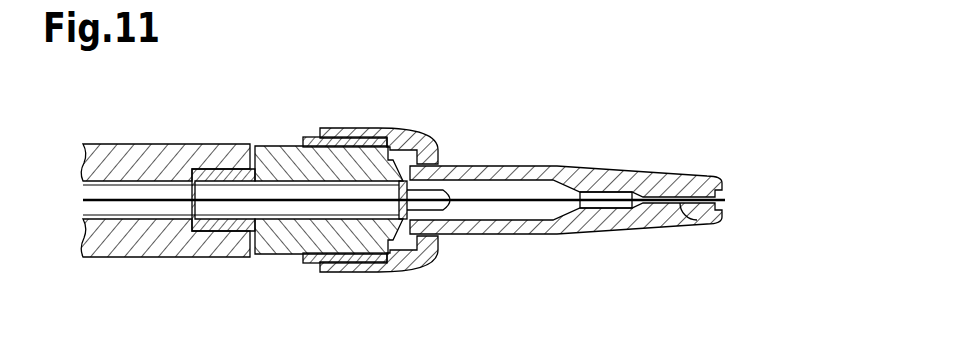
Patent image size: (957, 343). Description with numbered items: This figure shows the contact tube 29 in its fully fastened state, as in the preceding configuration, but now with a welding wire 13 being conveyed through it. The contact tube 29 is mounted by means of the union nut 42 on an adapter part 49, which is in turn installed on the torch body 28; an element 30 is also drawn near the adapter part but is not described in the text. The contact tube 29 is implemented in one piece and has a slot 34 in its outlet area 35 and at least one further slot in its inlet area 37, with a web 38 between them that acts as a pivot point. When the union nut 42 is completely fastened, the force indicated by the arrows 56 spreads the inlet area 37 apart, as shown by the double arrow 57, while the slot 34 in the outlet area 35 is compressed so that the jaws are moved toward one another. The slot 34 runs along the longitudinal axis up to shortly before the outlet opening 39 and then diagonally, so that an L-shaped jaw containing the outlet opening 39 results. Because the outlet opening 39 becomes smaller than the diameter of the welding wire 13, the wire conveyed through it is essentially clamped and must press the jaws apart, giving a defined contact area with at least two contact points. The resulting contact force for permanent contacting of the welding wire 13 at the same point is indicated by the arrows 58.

The welding wire 13 is at (135, 205).
The torch body 28 is at (165, 165).
The contact tube 29 is at (600, 218).
The retaining flange 30 is at (392, 180).
The slot 34 is at (710, 231).
The outlet area 35 is at (630, 128).
The inlet area 37 is at (479, 252).
The web 38 is at (475, 190).
The outlet opening 39 is at (730, 160).
The union nut 42 is at (337, 140).
The adapter part 49 is at (288, 238).
The arrows 56 is at (380, 95).
The double arrow 57 is at (393, 207).
The arrows 58 is at (688, 105).